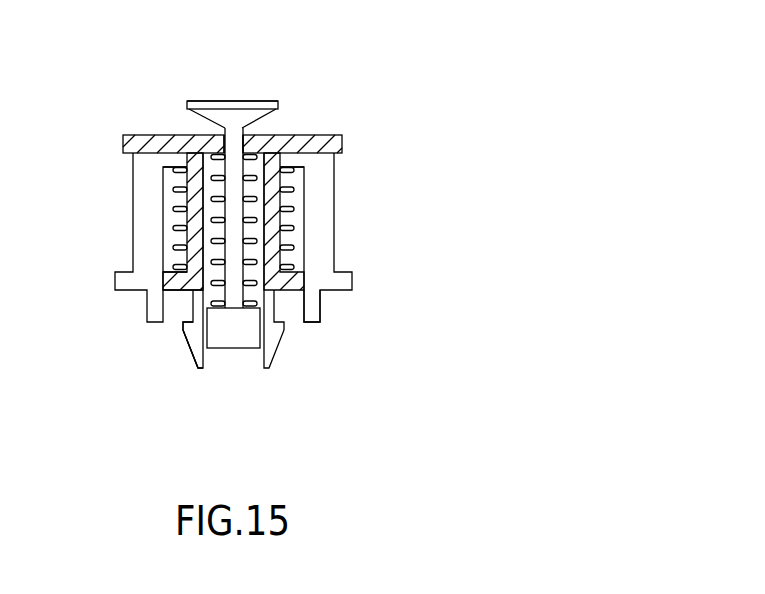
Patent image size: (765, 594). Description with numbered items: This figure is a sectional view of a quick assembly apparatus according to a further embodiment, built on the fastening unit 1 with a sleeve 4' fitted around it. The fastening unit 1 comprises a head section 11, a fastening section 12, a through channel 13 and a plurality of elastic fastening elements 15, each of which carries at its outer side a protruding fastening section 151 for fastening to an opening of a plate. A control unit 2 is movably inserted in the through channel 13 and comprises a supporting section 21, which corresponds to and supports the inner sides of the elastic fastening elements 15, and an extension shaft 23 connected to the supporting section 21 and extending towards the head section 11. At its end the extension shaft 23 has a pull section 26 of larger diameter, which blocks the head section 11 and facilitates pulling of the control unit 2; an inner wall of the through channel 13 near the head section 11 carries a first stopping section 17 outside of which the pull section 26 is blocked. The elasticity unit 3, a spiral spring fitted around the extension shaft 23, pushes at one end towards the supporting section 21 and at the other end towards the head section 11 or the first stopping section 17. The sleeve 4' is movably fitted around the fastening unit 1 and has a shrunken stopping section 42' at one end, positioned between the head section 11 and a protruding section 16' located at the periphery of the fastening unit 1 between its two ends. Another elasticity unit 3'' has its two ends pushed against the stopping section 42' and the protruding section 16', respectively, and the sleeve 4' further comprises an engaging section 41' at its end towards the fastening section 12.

The fastening unit 1 is at (170, 203).
The control unit 2 is at (278, 99).
The elasticity unit 3 is at (298, 231).
The another elasticity unit 3'' is at (286, 219).
The sleeve 4' is at (282, 230).
The head section 11 is at (163, 147).
The fastening section 12 is at (203, 370).
The through channel 13 is at (215, 231).
The elastic fastening elements 15 is at (180, 369).
The protruding section 16' is at (121, 306).
The first stopping section 17 is at (217, 147).
The supporting section 21 is at (237, 325).
The extension shaft 23 is at (233, 168).
The pull section 26 is at (230, 113).
The engaging section 41' is at (357, 305).
The stopping section 42' is at (289, 138).
The protruding fastening section 151 is at (182, 325).